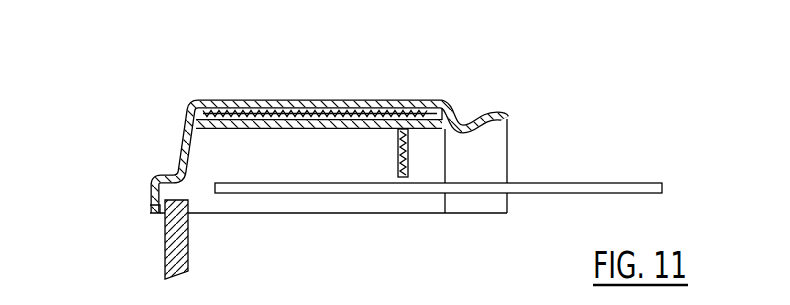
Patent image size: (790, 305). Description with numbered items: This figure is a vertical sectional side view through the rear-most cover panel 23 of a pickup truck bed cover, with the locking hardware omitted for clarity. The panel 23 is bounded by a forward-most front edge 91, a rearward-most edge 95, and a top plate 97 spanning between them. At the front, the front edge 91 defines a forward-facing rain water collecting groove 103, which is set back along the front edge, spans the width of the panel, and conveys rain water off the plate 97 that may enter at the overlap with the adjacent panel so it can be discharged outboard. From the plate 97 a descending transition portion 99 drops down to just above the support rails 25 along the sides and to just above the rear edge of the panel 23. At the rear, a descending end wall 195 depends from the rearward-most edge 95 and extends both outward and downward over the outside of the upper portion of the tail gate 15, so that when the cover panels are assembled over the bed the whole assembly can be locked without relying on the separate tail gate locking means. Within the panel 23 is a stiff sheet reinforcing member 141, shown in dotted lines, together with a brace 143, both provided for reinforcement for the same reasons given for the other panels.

The tail gate 15 is at (165, 258).
The rear cover panel 23 is at (273, 101).
The support rails 25 is at (603, 182).
The front edge 91 is at (508, 142).
The rearward-most edge 95 is at (150, 196).
The top plate 97 is at (373, 106).
The descending transition portion 99 is at (183, 140).
The rain water collecting groove 103 is at (478, 122).
The stiff sheet reinforcing member 141 is at (300, 112).
The brace 143 is at (397, 157).
The descending end wall 195 is at (148, 208).